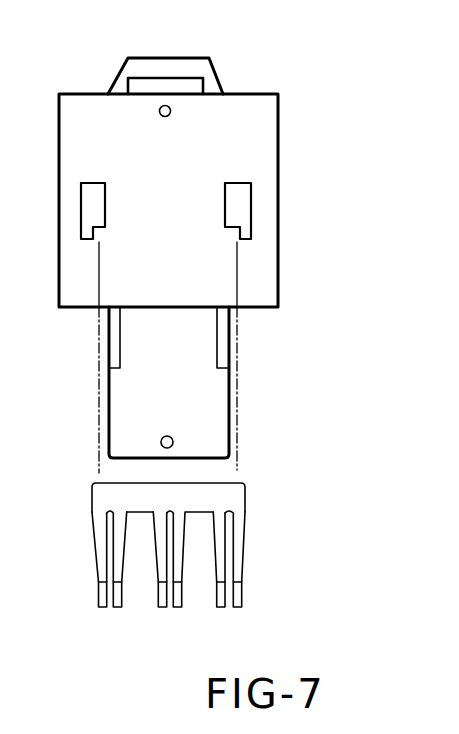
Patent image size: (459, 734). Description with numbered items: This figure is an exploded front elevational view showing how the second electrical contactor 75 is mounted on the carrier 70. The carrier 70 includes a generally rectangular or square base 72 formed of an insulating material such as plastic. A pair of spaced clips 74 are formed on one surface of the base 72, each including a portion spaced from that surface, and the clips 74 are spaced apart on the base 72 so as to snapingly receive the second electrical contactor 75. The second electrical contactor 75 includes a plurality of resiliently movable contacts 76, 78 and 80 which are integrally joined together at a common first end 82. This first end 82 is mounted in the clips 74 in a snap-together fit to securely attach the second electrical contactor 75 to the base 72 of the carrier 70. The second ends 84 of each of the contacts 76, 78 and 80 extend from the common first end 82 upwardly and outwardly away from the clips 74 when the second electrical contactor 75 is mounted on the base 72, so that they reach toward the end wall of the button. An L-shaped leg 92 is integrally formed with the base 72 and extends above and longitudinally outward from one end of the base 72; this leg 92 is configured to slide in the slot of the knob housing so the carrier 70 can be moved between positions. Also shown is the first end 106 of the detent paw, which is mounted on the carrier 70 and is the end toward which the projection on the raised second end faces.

The carrier 70 is at (82, 63).
The base 72 is at (59, 113).
The clips 74 is at (82, 183).
The first end 106 is at (200, 67).
The L-shaped leg 92 is at (215, 403).
The first end 82 is at (245, 490).
The second electrical contactor 75 is at (258, 514).
The contact 76 is at (100, 608).
The second ends 84 is at (122, 608).
The contact 78 is at (167, 610).
The contact 80 is at (222, 611).